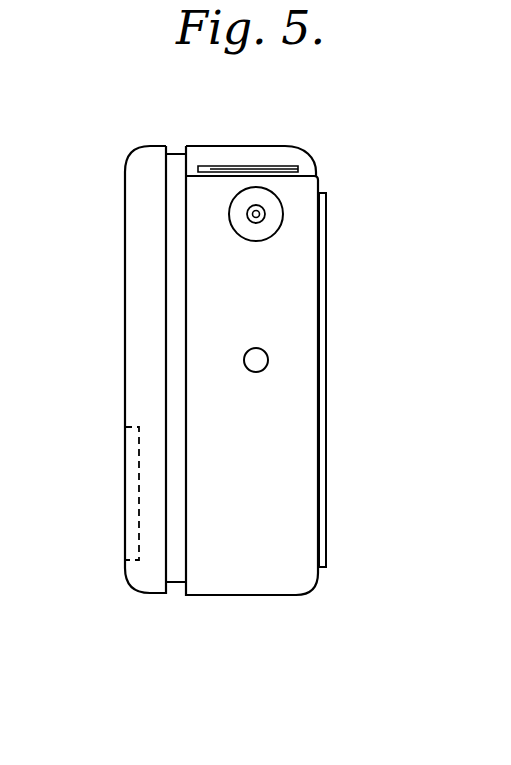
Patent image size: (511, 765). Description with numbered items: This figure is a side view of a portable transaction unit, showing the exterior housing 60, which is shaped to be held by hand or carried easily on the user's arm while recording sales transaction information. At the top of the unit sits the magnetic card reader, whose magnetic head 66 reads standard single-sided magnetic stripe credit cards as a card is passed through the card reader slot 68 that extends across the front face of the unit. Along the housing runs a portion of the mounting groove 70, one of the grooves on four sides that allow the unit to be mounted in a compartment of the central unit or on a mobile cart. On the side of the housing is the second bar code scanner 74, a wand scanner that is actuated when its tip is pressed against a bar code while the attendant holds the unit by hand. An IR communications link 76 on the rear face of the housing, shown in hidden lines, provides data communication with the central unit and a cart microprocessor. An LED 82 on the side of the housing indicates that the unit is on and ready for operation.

The exterior housing 60 is at (250, 567).
The magnetic head 66 is at (268, 168).
The card reader slot 68 is at (308, 172).
The mounting groove 70 is at (178, 274).
The second bar code scanner 74 is at (273, 217).
The IR communications link 76 is at (136, 503).
The LED 82 is at (268, 358).